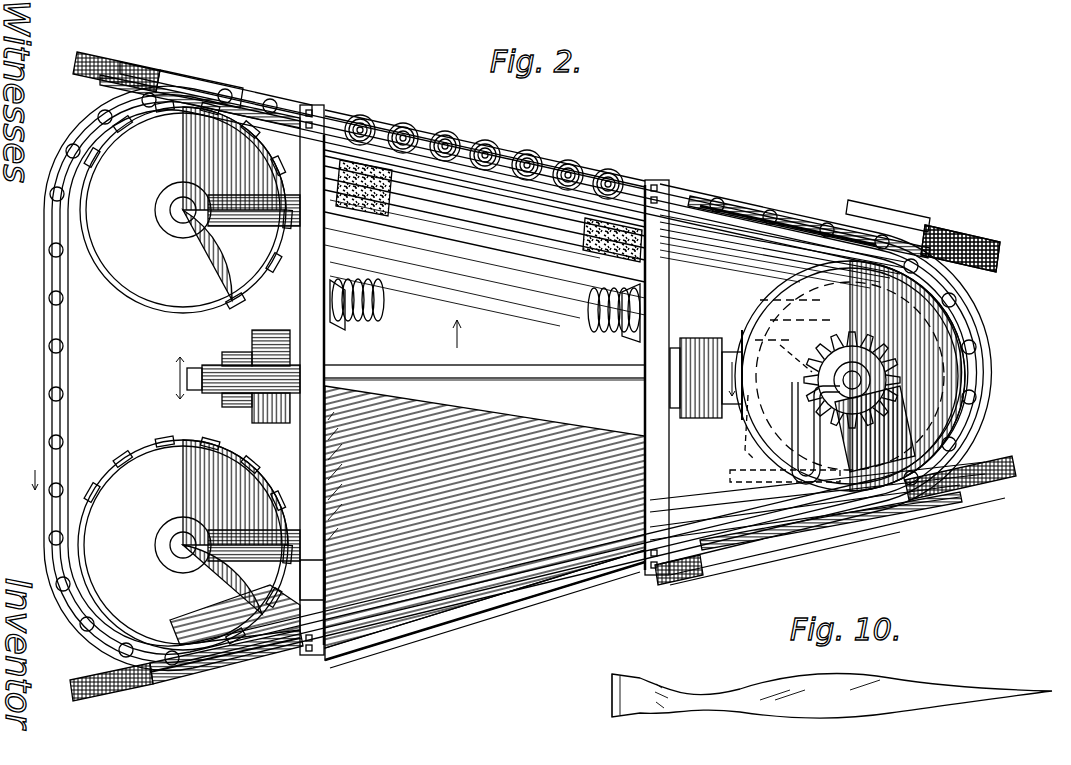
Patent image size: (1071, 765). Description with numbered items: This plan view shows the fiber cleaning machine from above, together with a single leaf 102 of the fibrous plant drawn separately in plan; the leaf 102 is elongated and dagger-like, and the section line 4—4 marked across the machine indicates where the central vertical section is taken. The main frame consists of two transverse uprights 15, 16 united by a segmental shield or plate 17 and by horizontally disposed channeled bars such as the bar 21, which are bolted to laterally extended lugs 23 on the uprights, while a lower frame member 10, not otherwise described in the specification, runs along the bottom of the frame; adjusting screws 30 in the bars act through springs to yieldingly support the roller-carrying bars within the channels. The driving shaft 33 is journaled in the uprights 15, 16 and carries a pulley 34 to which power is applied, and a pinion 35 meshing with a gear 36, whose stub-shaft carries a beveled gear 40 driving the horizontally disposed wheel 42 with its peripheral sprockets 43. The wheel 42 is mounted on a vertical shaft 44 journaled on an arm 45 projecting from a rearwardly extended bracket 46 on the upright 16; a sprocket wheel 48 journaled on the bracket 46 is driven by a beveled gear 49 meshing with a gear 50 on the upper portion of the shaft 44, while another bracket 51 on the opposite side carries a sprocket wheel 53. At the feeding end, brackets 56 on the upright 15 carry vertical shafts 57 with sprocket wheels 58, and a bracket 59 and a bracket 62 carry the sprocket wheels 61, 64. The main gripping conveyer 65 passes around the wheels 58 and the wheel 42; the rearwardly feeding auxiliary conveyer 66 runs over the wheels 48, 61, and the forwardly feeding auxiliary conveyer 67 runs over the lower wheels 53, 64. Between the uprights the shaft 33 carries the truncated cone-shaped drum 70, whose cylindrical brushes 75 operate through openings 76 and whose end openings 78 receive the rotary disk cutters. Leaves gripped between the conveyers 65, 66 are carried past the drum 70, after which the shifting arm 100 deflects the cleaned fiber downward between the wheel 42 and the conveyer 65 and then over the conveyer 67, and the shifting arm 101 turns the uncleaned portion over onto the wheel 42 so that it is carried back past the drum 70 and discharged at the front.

In FIG. 2, the shaft 4 is at (186, 378).
In FIG. 2, the base plate 10 is at (480, 592).
In FIG. 2, the upright 15 is at (300, 455).
In FIG. 2, the upright 16 is at (645, 402).
In FIG. 2, the segmental shield or plate 17 is at (484, 384).
In FIG. 2, the channeled bar 21 is at (545, 150).
In FIG. 2, the laterally extended lugs 23 is at (320, 118).
In FIG. 2, the adjusting screws 30 is at (448, 130).
In FIG. 2, the driving shaft 33 is at (232, 352).
In FIG. 2, the pulley 34 is at (275, 327).
In FIG. 2, the pinion 35 is at (700, 340).
In FIG. 2, the gear 36 is at (690, 418).
In FIG. 2, the beveled gear 40 is at (745, 378).
In FIG. 2, the horizontally disposed wheel 42 is at (790, 318).
In FIG. 2, the sprockets 43 is at (745, 445).
In FIG. 2, the vertical shaft 44 is at (835, 412).
In FIG. 2, the arm 45 is at (792, 430).
In FIG. 2, the bracket 46 is at (748, 545).
In FIG. 2, the sprocket wheel 48 is at (830, 535).
In FIG. 2, the beveled gear 49 is at (900, 376).
In FIG. 2, the beveled gear 50 is at (232, 478).
In FIG. 2, the bracket 51 is at (760, 232).
In FIG. 2, the sprocket wheel 53 is at (850, 210).
In FIG. 2, the brackets 56 is at (258, 228).
In FIG. 2, the shaft 57 is at (180, 210).
In FIG. 2, the sprocket wheel 58 is at (140, 305).
In FIG. 2, the bracket 59 is at (240, 606).
In FIG. 2, the sprocket wheel 61 is at (140, 698).
In FIG. 2, the bracket 62 is at (285, 100).
In FIG. 2, the sprocket wheel 64 is at (165, 70).
In FIG. 2, the main gripping conveyer 65 is at (44, 398).
In FIG. 2, the rearwardly feeding auxiliary conveyer 66 is at (995, 470).
In FIG. 2, the forwardly feeding auxiliary conveyer 67 is at (110, 60).
In FIG. 2, the truncated cone-shaped drum 70 is at (382, 312).
In FIG. 2, the cylindrical brush 75 is at (410, 190).
In FIG. 2, the openings 76 is at (420, 240).
In FIG. 2, the openings 78 is at (340, 327).
In FIG. 2, the shifting arm 100 is at (935, 240).
In FIG. 2, the shifting arm 101 is at (745, 262).
In FIG. 10, the leaves 102 is at (818, 712).